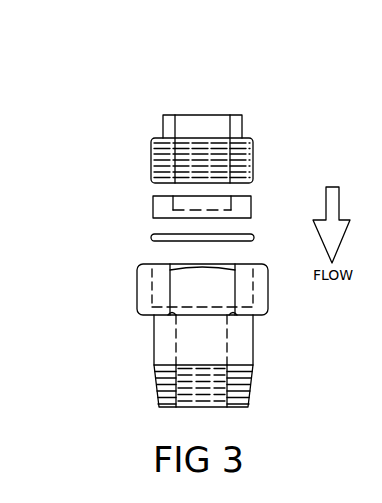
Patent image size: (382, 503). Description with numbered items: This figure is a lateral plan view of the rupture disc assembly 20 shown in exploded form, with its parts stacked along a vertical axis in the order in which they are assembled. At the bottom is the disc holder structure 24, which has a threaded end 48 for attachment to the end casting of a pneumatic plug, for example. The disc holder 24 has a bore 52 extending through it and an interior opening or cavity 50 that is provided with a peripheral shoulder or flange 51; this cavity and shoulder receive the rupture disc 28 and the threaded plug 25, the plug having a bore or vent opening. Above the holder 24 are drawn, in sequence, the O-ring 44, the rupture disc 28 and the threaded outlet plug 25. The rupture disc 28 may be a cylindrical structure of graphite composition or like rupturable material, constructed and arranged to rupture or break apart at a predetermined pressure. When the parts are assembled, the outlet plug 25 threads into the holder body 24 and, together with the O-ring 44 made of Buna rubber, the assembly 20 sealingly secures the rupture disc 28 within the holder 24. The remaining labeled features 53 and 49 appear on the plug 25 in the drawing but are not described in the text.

The rupture disc assembly 20 is at (165, 88).
The threaded plug 25 is at (162, 125).
The cap top portion 53 is at (213, 130).
The cap threads 49 is at (253, 155).
The rupture disc 28 is at (148, 205).
The O-ring 44 is at (150, 238).
The disc holder structure 24 is at (137, 293).
The interior opening or cavity 50 is at (195, 283).
The peripheral shoulder or flange 51 is at (217, 305).
The bore 52 is at (190, 340).
The threaded end 48 is at (250, 380).